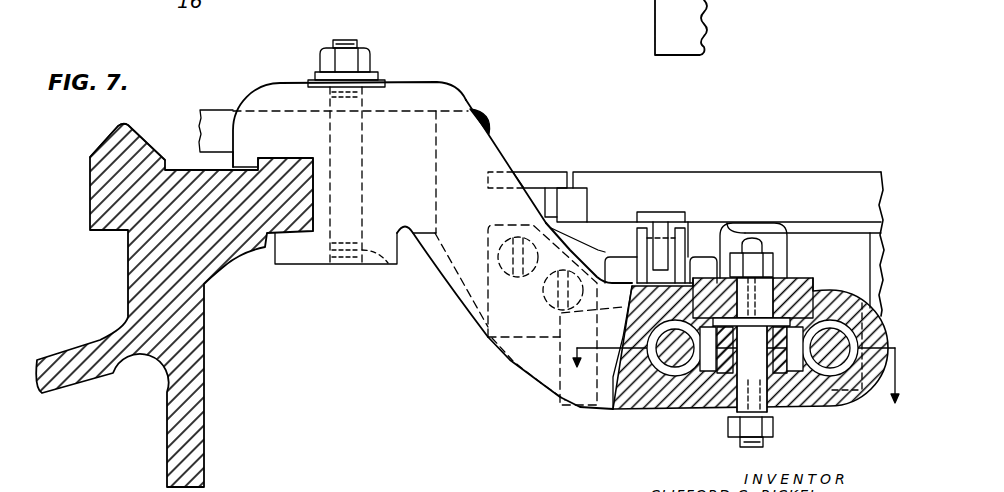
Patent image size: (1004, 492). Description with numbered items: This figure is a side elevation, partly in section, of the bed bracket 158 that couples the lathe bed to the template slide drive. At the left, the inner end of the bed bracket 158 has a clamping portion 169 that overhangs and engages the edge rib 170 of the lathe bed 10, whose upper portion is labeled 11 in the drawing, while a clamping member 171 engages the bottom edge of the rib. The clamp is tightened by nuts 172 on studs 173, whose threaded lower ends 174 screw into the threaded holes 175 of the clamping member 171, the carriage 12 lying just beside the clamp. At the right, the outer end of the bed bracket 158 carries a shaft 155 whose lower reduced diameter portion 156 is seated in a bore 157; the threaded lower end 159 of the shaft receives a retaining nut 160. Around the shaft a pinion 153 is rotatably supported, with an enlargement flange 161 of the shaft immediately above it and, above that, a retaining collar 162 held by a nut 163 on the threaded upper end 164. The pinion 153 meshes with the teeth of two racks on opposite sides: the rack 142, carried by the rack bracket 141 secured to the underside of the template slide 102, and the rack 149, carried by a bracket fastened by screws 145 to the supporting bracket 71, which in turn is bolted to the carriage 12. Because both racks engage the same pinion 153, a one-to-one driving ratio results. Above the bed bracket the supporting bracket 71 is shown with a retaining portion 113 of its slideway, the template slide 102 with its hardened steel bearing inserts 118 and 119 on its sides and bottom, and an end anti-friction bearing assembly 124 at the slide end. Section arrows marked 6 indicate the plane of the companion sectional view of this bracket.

The section line 6- 6 is at (735, 390).
The lathe bed 10 is at (204, 290).
The flange 11 is at (108, 141).
The carriage 12 is at (217, 114).
The supporting bracket 71 is at (493, 118).
The template slide 102 is at (742, 184).
The retaining portion 113 is at (538, 174).
The hardened steel bearing insert 118 is at (579, 190).
The hardened steel bearing insert 119 is at (664, 212).
The end anti-friction bearing assembly 124 is at (636, 232).
The rack bracket 141 is at (843, 230).
The rack 142 is at (836, 362).
The screws 145 is at (550, 308).
The rack 149 is at (644, 410).
The pinion 153 is at (822, 326).
The shaft 155 is at (752, 345).
The lower reduced diameter portion 156 is at (712, 404).
The bore 157 is at (719, 414).
The bed bracket 158 is at (441, 98).
The threaded lower end 159 is at (765, 444).
The retaining nut 160 is at (770, 428).
The enlargement flange 161 is at (791, 276).
The retaining collar 162 is at (699, 250).
The nut 163 is at (781, 260).
The threaded upper end 164 is at (772, 257).
The clamping portion 169 is at (262, 93).
The edge rib 170 is at (288, 164).
The clamping member 171 is at (293, 257).
The nuts 172 is at (370, 60).
The studs 173 is at (340, 40).
The threaded lower ends 174 is at (347, 268).
The threaded holes 175 is at (388, 264).